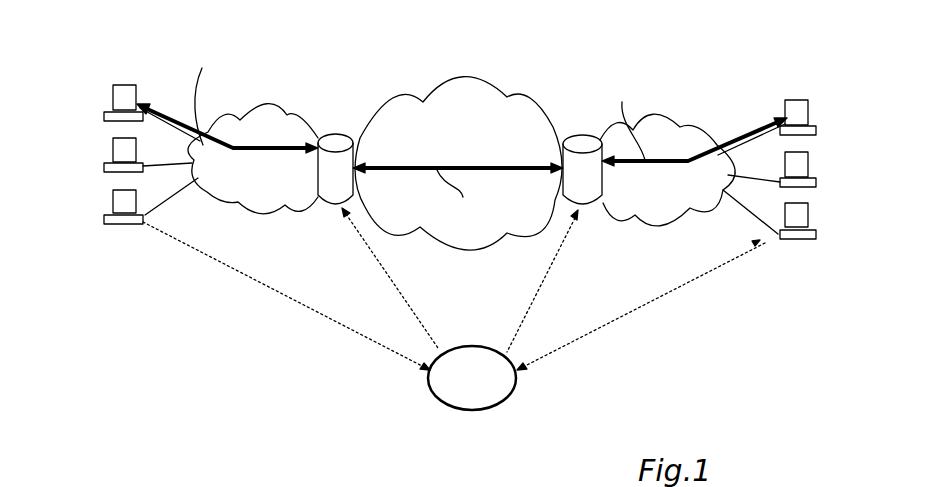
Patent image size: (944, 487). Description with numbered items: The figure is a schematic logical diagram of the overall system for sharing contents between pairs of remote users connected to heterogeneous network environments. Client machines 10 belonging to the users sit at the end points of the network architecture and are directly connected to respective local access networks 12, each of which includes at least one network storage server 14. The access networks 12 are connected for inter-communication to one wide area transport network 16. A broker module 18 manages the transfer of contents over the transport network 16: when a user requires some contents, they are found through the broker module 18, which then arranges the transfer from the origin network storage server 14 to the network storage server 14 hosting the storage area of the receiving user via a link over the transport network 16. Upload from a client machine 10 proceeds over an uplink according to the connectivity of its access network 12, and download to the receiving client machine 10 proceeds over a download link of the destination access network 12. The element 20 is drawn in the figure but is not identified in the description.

The user equipment / terminal 10 is at (110, 100).
The access network 12 is at (267, 117).
The gateway / edge node 14 is at (330, 195).
The transport network 16 is at (478, 93).
The control node / server 18 is at (460, 400).
The element 20 (partially shown) 20 is at (228, 486).